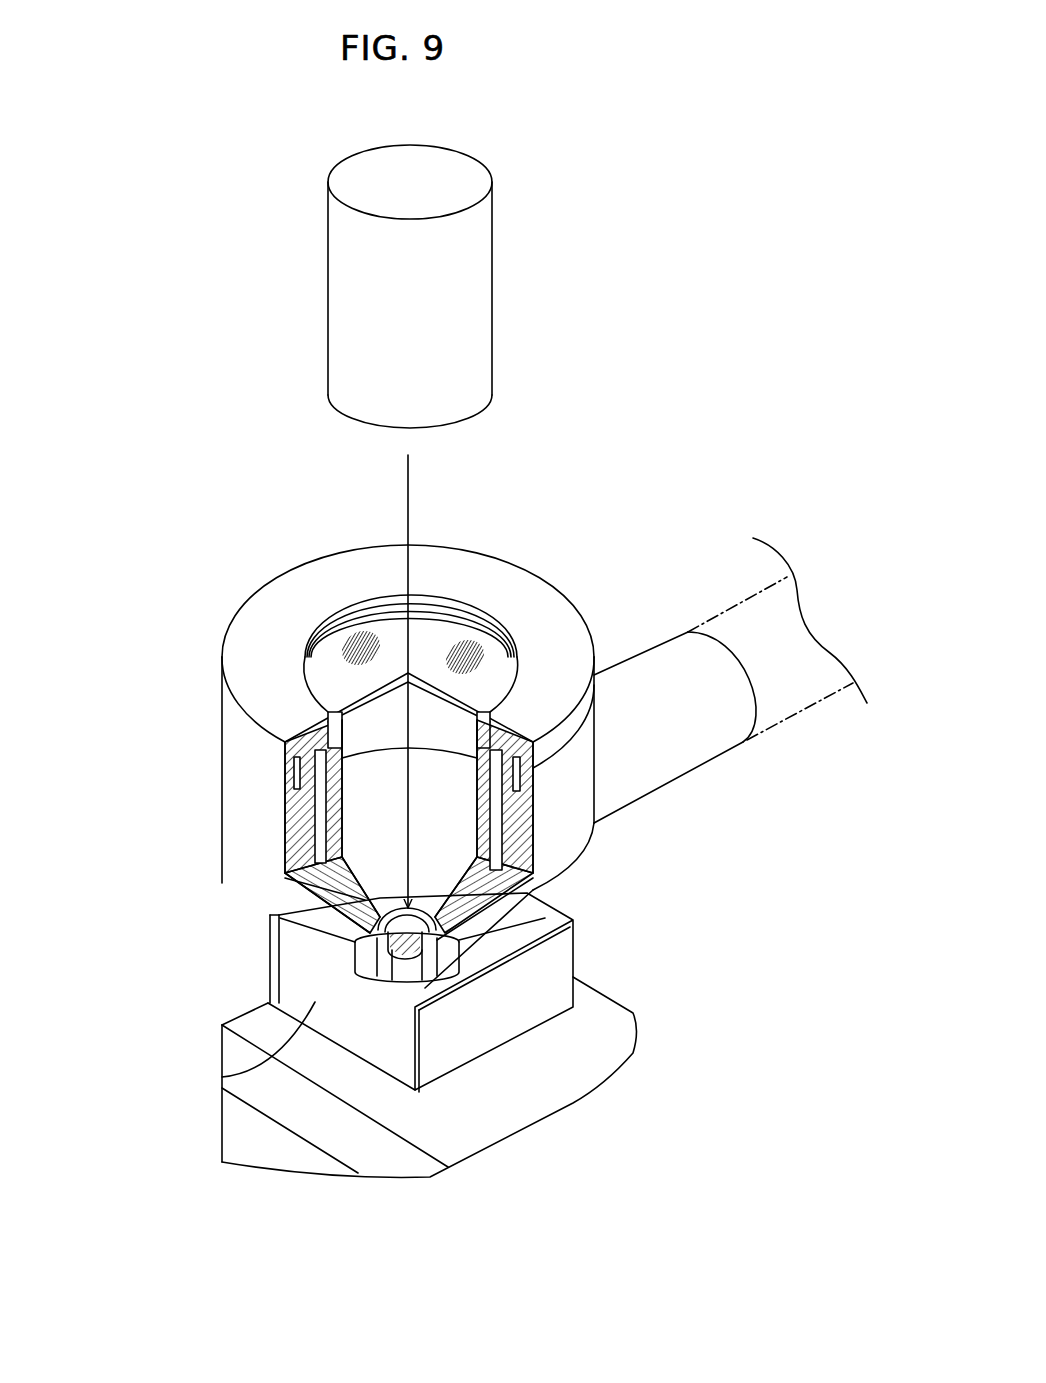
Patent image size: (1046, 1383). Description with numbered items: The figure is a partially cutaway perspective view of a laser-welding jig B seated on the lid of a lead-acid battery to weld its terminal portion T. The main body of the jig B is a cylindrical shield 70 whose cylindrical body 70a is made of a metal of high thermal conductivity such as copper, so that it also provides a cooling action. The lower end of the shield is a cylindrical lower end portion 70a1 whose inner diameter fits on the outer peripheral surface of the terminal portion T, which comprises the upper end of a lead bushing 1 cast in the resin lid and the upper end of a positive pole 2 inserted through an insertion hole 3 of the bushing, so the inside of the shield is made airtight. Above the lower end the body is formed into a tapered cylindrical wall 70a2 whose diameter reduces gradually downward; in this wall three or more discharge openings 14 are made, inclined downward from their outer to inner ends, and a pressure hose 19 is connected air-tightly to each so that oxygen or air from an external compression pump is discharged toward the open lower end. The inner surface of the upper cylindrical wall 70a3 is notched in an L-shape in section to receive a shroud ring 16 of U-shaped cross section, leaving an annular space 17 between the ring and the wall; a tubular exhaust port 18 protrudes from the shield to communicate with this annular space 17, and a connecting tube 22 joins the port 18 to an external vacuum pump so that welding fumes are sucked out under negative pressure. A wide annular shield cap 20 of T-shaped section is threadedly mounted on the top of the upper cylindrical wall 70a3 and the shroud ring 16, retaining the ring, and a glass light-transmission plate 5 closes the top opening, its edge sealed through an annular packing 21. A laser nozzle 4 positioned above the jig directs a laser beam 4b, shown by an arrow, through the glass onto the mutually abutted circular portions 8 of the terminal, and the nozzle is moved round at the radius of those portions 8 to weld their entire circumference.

The lead bushing 1 is at (392, 950).
The positive pole 2 is at (417, 952).
The insertion hole 3 is at (423, 955).
The laser nozzle 4 is at (467, 293).
The laser beam 4b is at (413, 483).
The light-transmission plate 5 is at (445, 630).
The circular portions to be welded 8 is at (393, 912).
The discharge opening 14 is at (285, 873).
The shroud ring 16 is at (533, 790).
The annular space 17 is at (533, 827).
The tubular exhaust port 18 is at (693, 750).
The pressure hose 19 is at (280, 880).
The annular shield cap 20 is at (253, 663).
The annular packing 21 is at (333, 712).
The connecting tube 22 is at (733, 600).
The cylindrical shield 70 is at (572, 593).
The cylindrical body 70a is at (253, 835).
The cylindrical lower end portion 70a1 is at (222, 1078).
The tapered cylindrical wall 70a2 is at (365, 900).
The upper cylindrical wall 70a3 is at (552, 863).
The laser-welding jig B is at (222, 592).
The terminal portion T is at (433, 903).